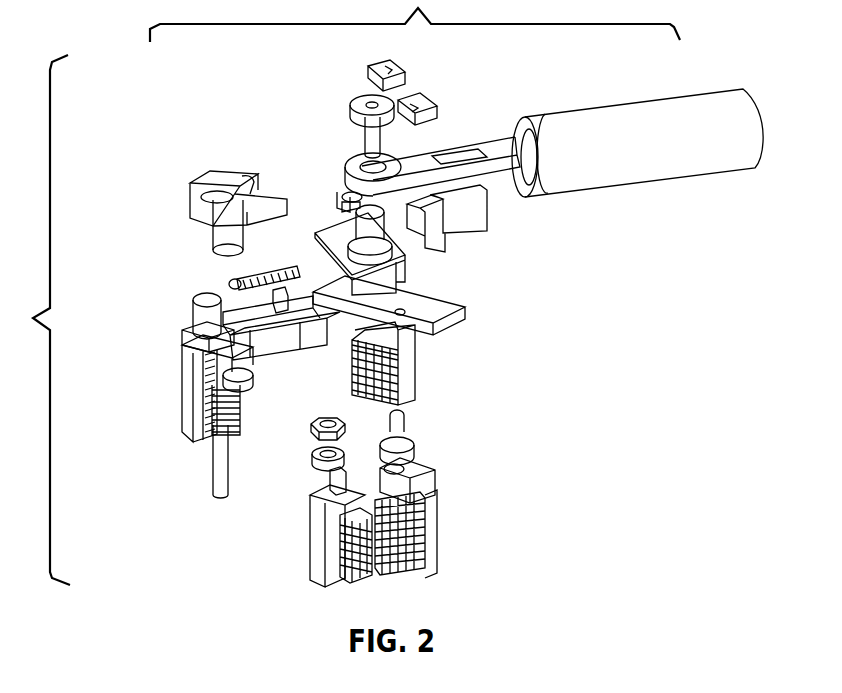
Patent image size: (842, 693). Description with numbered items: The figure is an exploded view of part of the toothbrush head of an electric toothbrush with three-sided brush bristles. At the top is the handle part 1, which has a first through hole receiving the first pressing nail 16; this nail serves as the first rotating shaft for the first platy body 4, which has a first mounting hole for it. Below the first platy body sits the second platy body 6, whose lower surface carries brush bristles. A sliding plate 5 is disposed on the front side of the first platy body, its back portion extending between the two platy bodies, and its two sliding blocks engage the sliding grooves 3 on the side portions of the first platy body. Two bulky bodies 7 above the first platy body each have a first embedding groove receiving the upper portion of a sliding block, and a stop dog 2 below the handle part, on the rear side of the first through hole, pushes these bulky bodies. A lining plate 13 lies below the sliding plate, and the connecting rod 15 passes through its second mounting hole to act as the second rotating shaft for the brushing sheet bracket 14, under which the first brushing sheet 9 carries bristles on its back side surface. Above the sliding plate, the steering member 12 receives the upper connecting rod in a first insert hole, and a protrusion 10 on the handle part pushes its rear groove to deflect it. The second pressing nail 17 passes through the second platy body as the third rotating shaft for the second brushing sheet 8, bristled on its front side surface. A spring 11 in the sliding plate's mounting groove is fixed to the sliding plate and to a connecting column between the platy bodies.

The handle part 1 is at (587, 170).
The stop dog 2 is at (485, 226).
The sliding grooves 3 is at (427, 265).
The first platy body 4 is at (433, 285).
The sliding plate 5 is at (200, 320).
The second platy body 6 is at (427, 330).
The bulky bodies 7 is at (430, 108).
The second brushing sheet 8 is at (437, 540).
The first brushing sheet 9 is at (312, 545).
The protrusion 10 is at (345, 190).
The spring 11 is at (233, 282).
The steering member 12 is at (188, 195).
The lining plate 13 is at (182, 373).
The brushing sheet bracket 14 is at (222, 385).
The connecting rod 15 is at (215, 467).
The first pressing nail 16 is at (365, 135).
The second pressing nail 17 is at (407, 430).